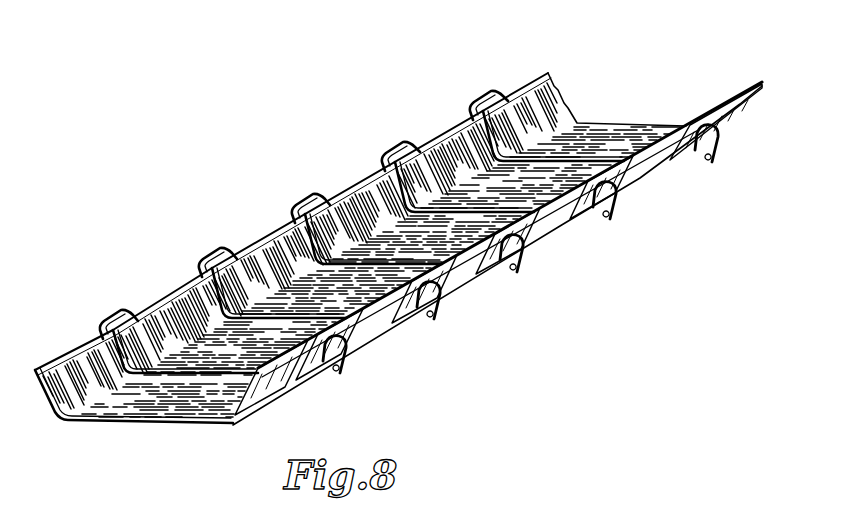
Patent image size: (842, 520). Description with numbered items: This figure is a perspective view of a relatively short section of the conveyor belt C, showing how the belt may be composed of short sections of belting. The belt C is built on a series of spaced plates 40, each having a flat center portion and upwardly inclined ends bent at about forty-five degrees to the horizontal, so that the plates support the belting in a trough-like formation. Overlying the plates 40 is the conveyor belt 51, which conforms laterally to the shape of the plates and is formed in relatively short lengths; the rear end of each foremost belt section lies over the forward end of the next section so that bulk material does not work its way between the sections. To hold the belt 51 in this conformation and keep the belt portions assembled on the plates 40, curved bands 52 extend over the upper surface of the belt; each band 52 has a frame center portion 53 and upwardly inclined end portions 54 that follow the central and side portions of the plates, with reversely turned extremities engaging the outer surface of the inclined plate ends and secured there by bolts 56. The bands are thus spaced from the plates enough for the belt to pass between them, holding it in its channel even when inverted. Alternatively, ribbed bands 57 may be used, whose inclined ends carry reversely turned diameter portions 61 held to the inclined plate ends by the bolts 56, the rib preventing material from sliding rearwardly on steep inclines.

The spaced plates 40 is at (307, 380).
The conveyor belt 51 is at (67, 355).
The curved bands 52 is at (167, 375).
The frame center portion 53 is at (204, 372).
The upwardly inclined end portions 54 is at (108, 326).
The bolts 56 is at (343, 347).
The ribbed bands 57 is at (213, 263).
The reversely turned diameter portions 61 is at (433, 287).
The belt C is at (270, 240).